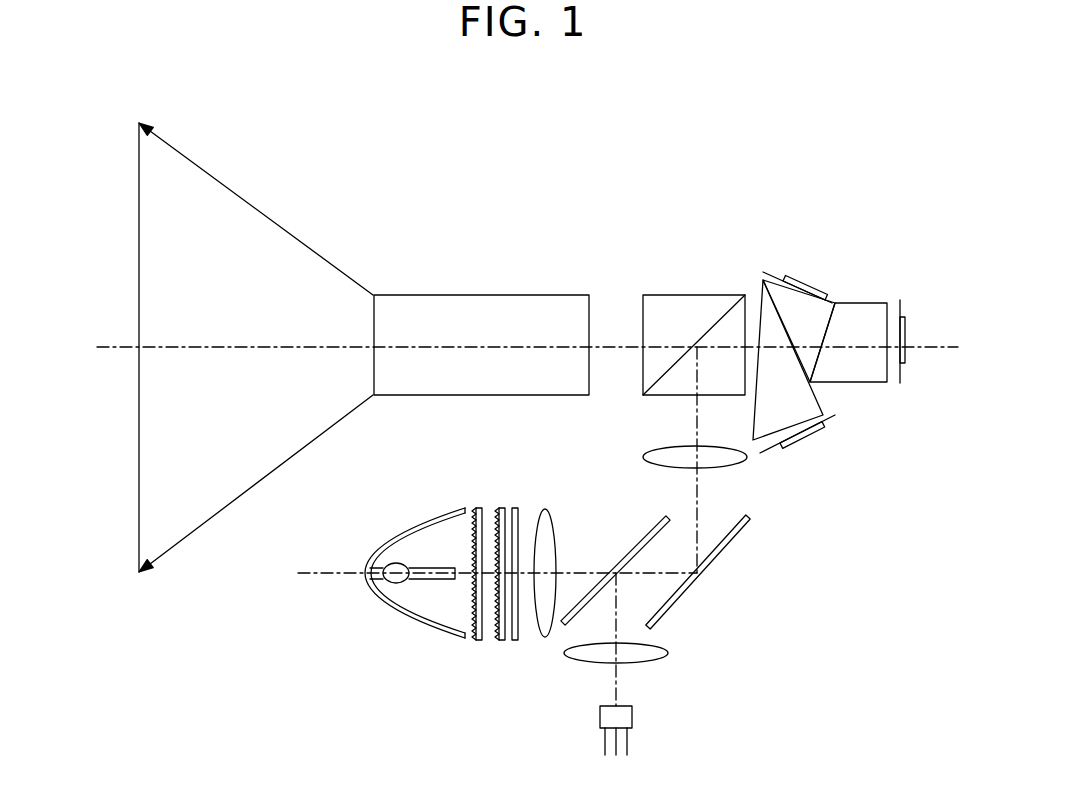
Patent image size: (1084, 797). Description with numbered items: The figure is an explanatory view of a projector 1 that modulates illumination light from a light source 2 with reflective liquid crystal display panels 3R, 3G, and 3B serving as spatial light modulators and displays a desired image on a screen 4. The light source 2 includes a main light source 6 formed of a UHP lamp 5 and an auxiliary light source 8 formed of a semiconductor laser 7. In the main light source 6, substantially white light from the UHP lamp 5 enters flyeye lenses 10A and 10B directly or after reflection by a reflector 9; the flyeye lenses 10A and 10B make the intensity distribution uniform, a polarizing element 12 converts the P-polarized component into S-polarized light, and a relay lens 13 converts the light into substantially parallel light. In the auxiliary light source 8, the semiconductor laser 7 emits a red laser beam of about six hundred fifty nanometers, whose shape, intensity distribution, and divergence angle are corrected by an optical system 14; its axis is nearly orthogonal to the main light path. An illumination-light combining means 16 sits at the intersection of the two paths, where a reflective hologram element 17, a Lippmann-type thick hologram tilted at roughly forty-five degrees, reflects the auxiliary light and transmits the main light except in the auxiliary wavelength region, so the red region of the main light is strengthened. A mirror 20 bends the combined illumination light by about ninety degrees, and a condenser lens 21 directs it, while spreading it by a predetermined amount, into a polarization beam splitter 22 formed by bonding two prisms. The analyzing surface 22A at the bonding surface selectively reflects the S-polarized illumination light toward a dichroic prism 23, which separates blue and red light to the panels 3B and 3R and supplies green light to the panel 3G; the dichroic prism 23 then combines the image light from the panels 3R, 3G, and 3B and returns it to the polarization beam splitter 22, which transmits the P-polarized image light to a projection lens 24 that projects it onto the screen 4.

The projector 1 is at (377, 202).
The light source 2 is at (385, 620).
The reflective liquid crystal display panel 3R is at (808, 276).
The reflective liquid crystal display panel 3G is at (905, 360).
The reflective liquid crystal display panel 3B is at (810, 445).
The screen 4 is at (139, 200).
The UHP lamp 5 is at (395, 563).
The main light source 6 is at (486, 595).
The semiconductor laser 7 is at (633, 718).
The auxiliary light source 8 is at (679, 589).
The reflector 9 is at (367, 590).
The flyeye lens 10A is at (478, 642).
The flyeye lens 10B is at (502, 642).
The polarizing element 12 is at (515, 507).
The relay lens 13 is at (545, 510).
The optical system 14 is at (668, 653).
The illumination-light combining means 16 is at (679, 526).
The reflective hologram element 17 is at (638, 544).
The mirror 20 is at (735, 545).
The condenser lens 21 is at (740, 460).
The polarization beam splitter 22 is at (702, 307).
The analyzing surface 22A is at (728, 312).
The dichroic prism 23 is at (861, 339).
The projection lens 24 is at (548, 295).